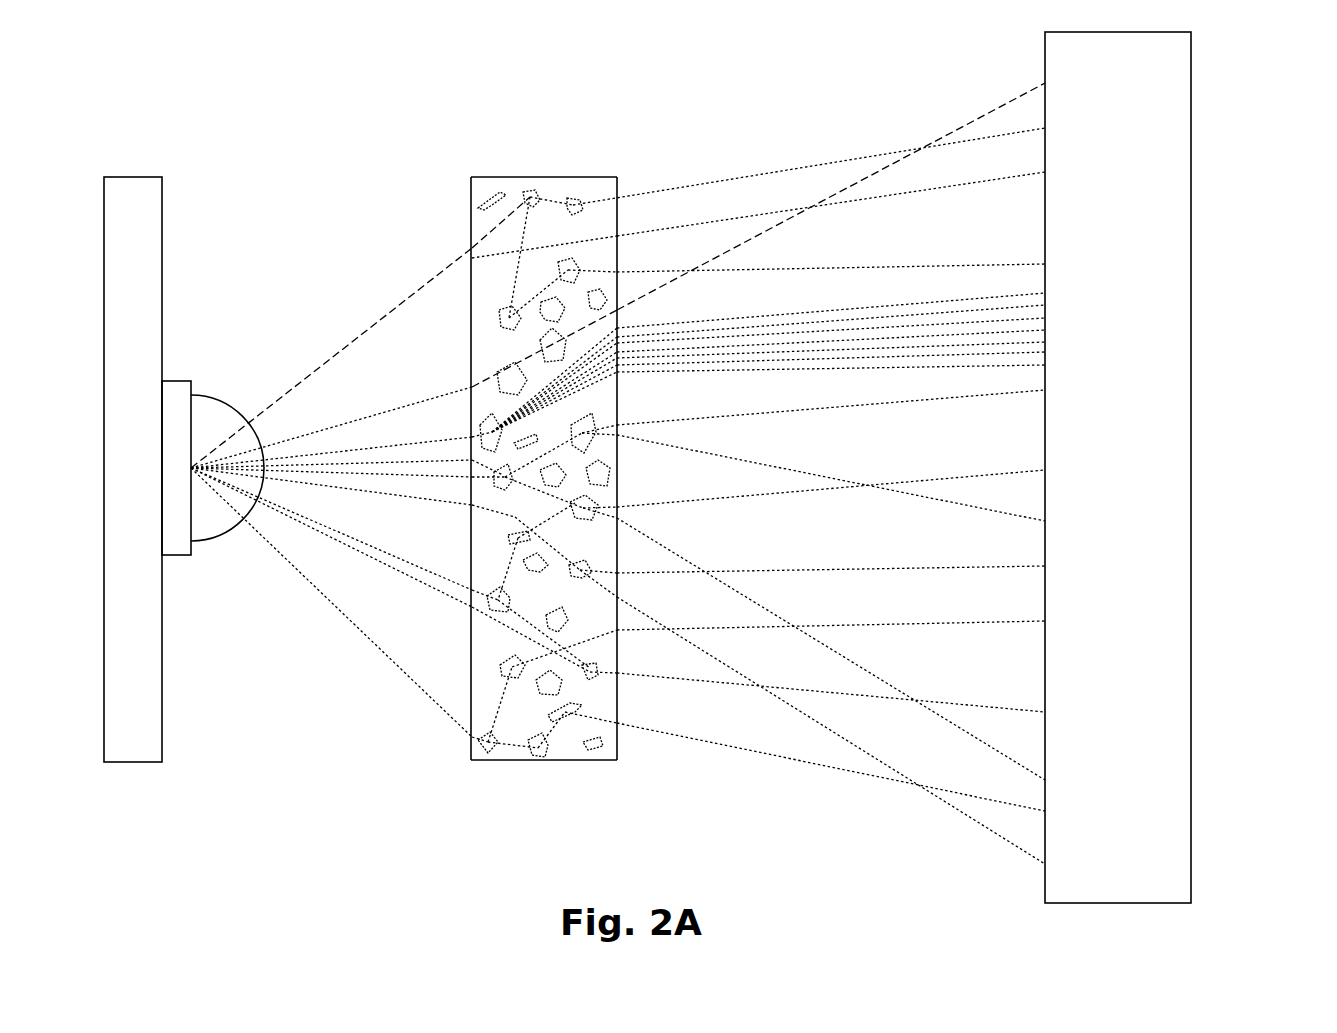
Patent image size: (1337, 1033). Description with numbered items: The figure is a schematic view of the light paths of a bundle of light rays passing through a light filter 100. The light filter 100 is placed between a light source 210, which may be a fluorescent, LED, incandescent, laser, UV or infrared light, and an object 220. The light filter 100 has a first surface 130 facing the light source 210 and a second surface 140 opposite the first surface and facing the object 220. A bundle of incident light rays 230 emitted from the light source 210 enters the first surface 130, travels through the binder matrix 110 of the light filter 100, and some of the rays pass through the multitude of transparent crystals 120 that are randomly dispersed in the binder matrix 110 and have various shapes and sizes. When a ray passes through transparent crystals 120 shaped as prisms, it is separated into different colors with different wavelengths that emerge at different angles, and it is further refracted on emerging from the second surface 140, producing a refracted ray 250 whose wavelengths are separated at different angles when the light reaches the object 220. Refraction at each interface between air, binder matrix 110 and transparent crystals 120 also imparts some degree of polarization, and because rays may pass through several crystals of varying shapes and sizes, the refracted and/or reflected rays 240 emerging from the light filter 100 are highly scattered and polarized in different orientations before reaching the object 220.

The light filter 100 is at (541, 430).
The binder matrix 110 is at (592, 190).
The transparent crystals 120 is at (471, 200).
The first surface 130 is at (472, 738).
The second surface 140 is at (618, 738).
The light source 210 is at (207, 368).
The object 220 is at (1215, 218).
The incident light rays 230 is at (343, 632).
The refracted and/or reflected rays 240 is at (820, 140).
The refracted ray 250 is at (953, 285).